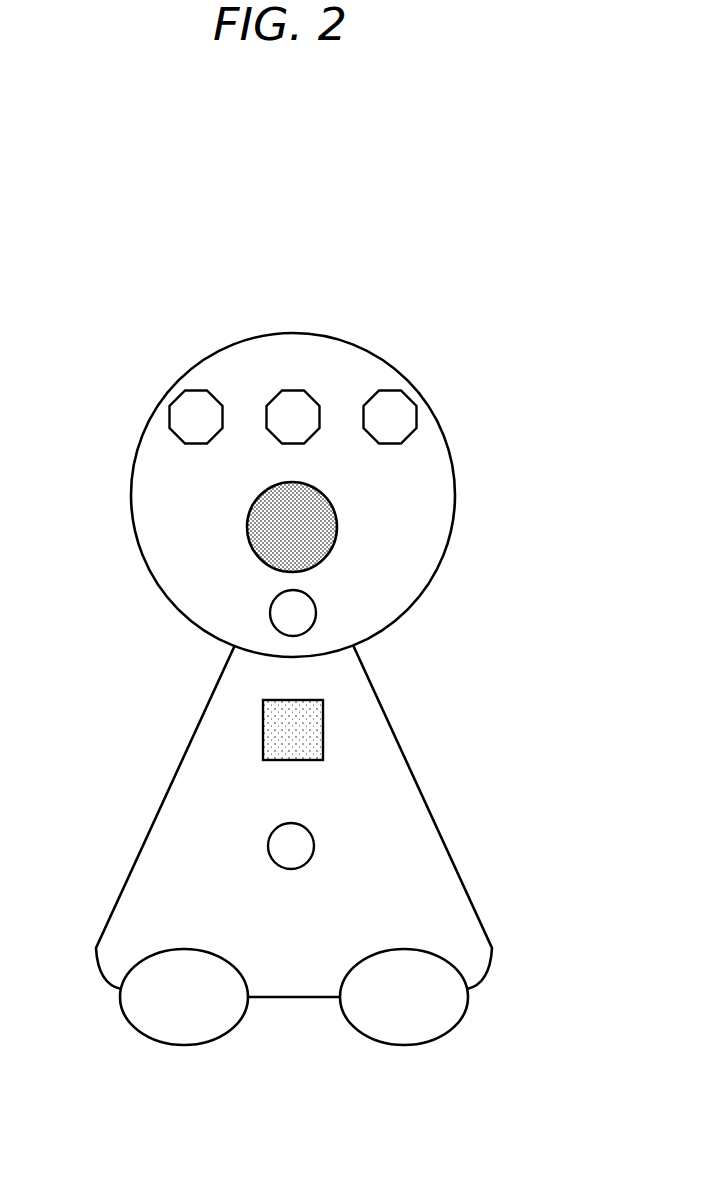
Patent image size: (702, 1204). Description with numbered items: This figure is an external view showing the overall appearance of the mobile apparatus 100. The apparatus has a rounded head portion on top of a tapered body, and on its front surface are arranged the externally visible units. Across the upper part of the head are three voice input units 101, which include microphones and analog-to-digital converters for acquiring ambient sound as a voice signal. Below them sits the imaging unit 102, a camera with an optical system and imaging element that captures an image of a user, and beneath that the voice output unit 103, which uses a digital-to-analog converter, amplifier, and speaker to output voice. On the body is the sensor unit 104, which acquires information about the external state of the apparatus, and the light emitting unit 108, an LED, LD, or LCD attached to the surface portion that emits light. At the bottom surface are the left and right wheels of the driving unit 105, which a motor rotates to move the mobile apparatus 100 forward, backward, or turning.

The mobile apparatus 100 is at (299, 249).
The voice input unit 101 is at (172, 408).
The imaging unit 102 is at (248, 529).
The voice output unit 103 is at (270, 616).
The sensor unit 104 is at (263, 725).
The driving unit 105 is at (147, 958).
The light emitting unit 108 is at (268, 848).